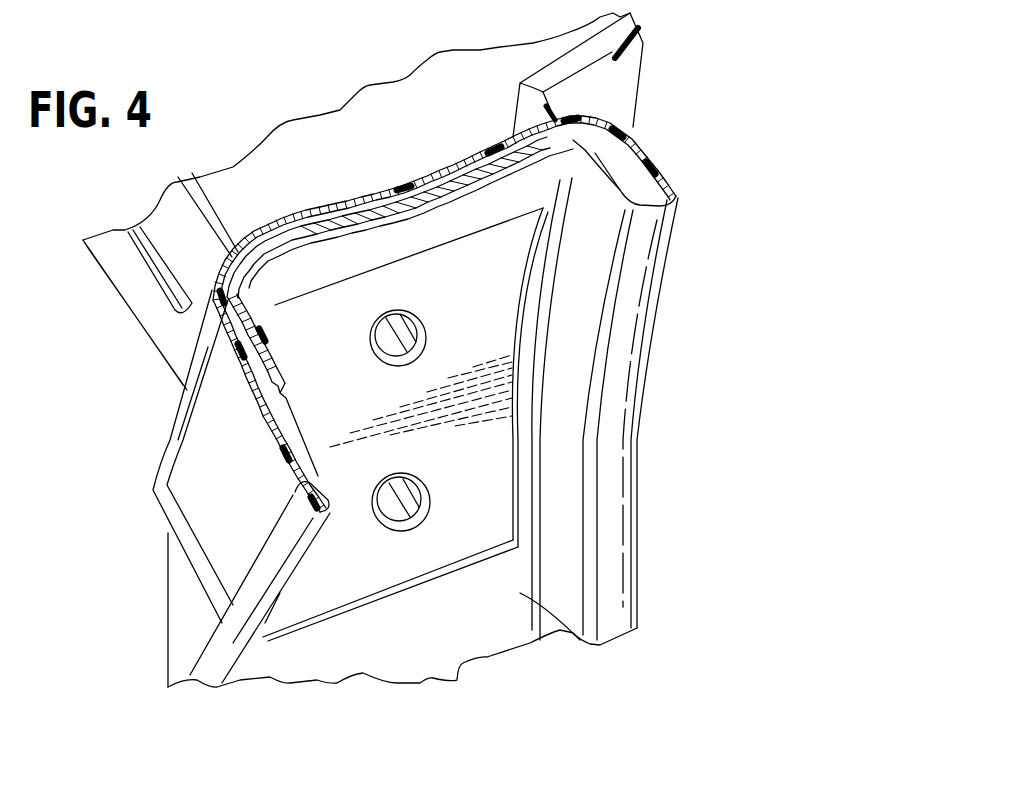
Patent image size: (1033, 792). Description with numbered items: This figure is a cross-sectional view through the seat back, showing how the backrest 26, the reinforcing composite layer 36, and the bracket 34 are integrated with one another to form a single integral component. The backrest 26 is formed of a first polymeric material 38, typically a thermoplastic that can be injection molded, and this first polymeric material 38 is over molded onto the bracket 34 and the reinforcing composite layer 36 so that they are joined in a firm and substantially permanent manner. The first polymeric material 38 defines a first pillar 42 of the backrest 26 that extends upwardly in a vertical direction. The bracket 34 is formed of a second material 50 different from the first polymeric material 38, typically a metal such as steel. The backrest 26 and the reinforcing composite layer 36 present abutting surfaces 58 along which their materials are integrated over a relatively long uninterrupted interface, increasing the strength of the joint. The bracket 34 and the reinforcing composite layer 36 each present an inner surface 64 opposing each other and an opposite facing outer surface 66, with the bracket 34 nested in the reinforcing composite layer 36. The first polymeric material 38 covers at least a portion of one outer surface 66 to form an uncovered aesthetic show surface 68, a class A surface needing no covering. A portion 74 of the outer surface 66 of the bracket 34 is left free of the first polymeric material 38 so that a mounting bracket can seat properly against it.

The backrest 26 is at (600, 35).
The bracket 34 is at (610, 187).
The reinforcing composite layer 36 is at (205, 405).
The first polymeric material 38 is at (240, 338).
The first pillar 42 is at (610, 367).
The second material 50 is at (397, 221).
The abutting surfaces 58 is at (318, 215).
The inner surface 64 is at (440, 182).
The outer surface 66 is at (437, 165).
The uncovered aesthetic show surface 68 is at (633, 127).
The portion 74 is at (343, 580).